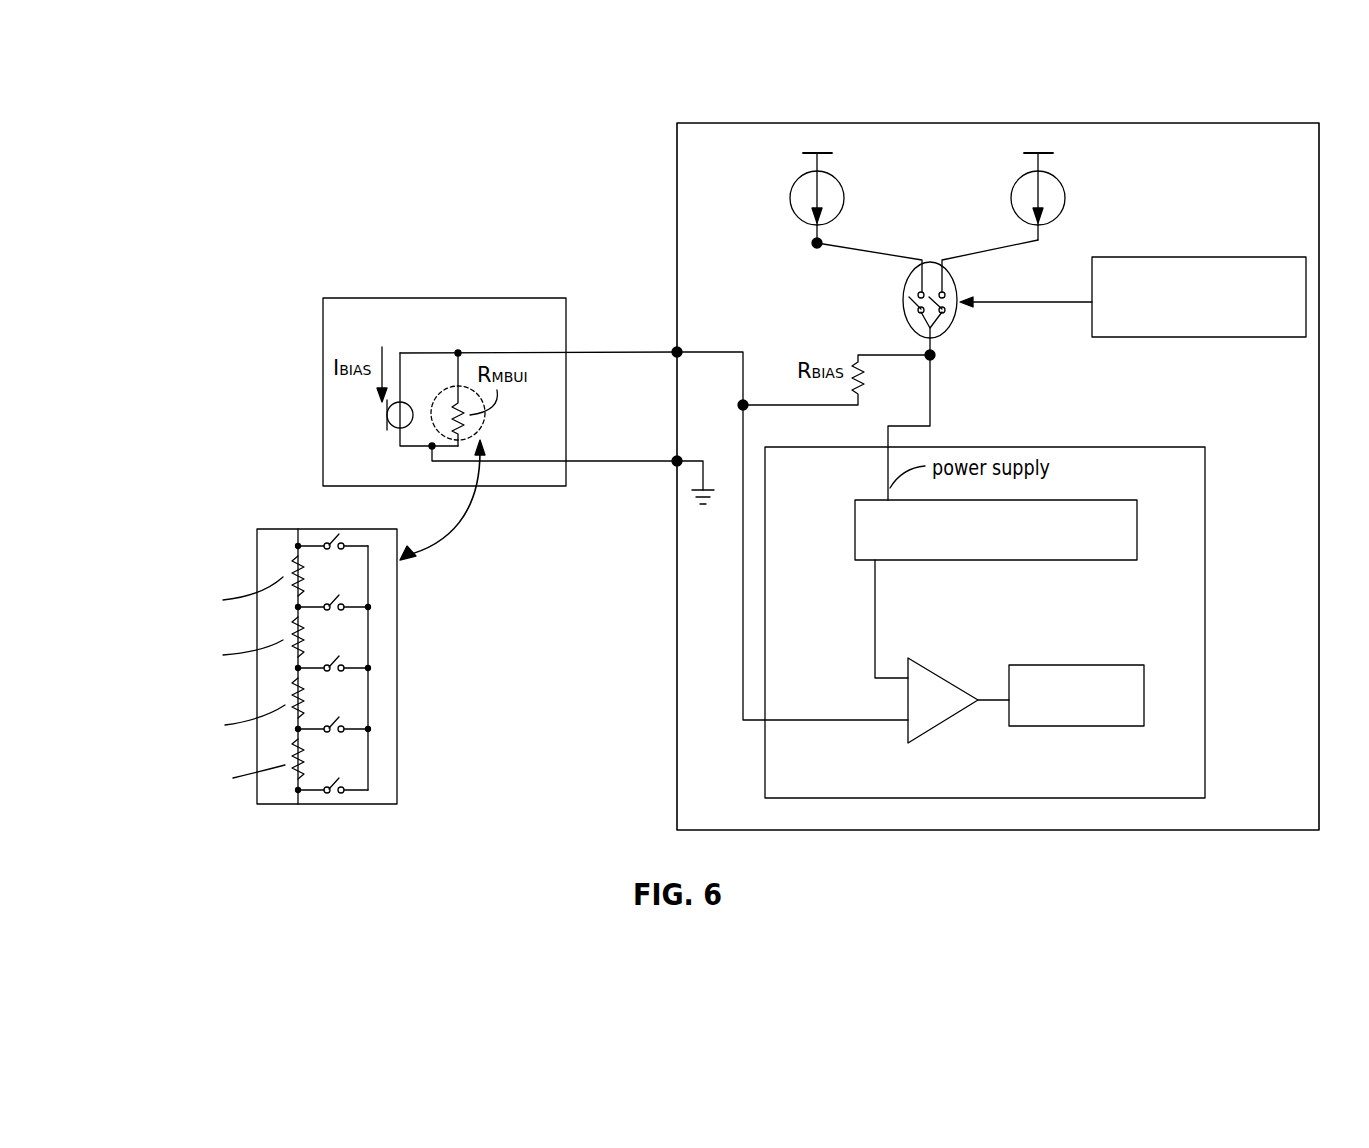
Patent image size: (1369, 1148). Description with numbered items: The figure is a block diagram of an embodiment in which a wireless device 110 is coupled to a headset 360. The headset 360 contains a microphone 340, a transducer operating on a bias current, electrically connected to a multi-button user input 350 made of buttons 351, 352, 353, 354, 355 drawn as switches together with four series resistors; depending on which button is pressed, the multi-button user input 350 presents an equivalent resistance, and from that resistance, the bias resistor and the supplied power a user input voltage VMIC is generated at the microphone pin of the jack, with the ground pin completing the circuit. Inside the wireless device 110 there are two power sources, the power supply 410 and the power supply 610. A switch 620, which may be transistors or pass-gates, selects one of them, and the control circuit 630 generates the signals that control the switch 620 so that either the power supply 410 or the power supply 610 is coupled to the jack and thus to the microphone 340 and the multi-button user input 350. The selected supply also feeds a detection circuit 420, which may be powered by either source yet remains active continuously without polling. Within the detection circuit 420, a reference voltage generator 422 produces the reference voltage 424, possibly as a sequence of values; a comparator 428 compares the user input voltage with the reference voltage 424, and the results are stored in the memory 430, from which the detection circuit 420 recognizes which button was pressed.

The wireless device 110 is at (1200, 127).
The microphone 340 is at (386, 430).
The multi-button user input 350 is at (284, 640).
The button 351 is at (347, 550).
The button 352 is at (347, 611).
The button 353 is at (347, 672).
The button 354 is at (347, 733).
The button 355 is at (347, 794).
The headset 360 is at (415, 298).
The power supply 410 is at (882, 222).
The detection circuit 420 is at (1037, 446).
The reference voltage generator 422 is at (1062, 556).
The reference voltage 424 is at (877, 633).
The comparator 428 is at (950, 722).
The memory 430 is at (628, 332).
The power supply 610 is at (1066, 222).
The switch 620 is at (950, 311).
The control circuit 630 is at (1290, 307).